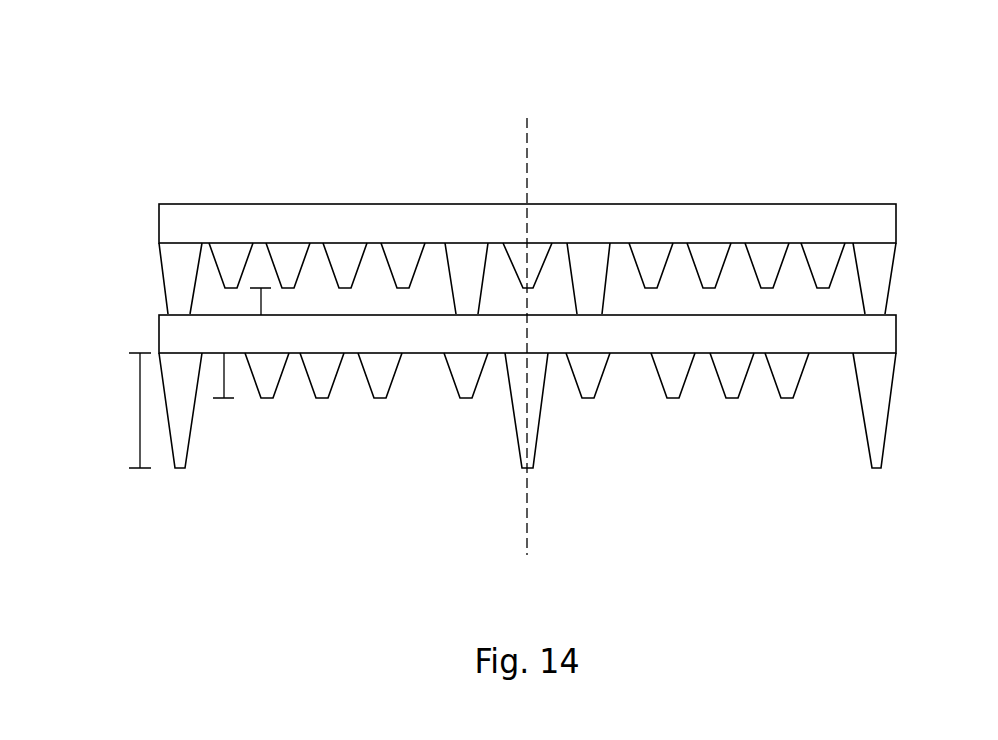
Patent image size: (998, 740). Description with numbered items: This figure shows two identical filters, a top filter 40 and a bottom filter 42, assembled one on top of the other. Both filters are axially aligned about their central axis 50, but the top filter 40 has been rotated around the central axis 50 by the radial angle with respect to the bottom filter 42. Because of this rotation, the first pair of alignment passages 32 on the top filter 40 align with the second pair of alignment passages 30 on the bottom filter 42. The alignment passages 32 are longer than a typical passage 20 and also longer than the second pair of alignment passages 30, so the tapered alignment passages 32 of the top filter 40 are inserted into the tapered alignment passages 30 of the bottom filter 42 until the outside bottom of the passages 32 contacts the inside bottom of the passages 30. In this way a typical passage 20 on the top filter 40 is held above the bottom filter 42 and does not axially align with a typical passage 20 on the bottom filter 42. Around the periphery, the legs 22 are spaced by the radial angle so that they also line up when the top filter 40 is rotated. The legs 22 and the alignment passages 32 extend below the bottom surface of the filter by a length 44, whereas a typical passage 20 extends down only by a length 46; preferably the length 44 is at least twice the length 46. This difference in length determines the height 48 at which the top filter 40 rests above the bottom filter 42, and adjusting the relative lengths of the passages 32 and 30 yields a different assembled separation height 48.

The typical passage 20 is at (708, 256).
The leg 22 is at (180, 275).
The second pair of alignment passages 30 is at (536, 258).
The first pair of alignment passages 32 is at (465, 266).
The top filter 40 is at (872, 223).
The bottom filter 42 is at (873, 333).
The length 44 is at (139, 410).
The length 46 is at (224, 376).
The height 48 is at (255, 298).
The central axis 50 is at (527, 125).